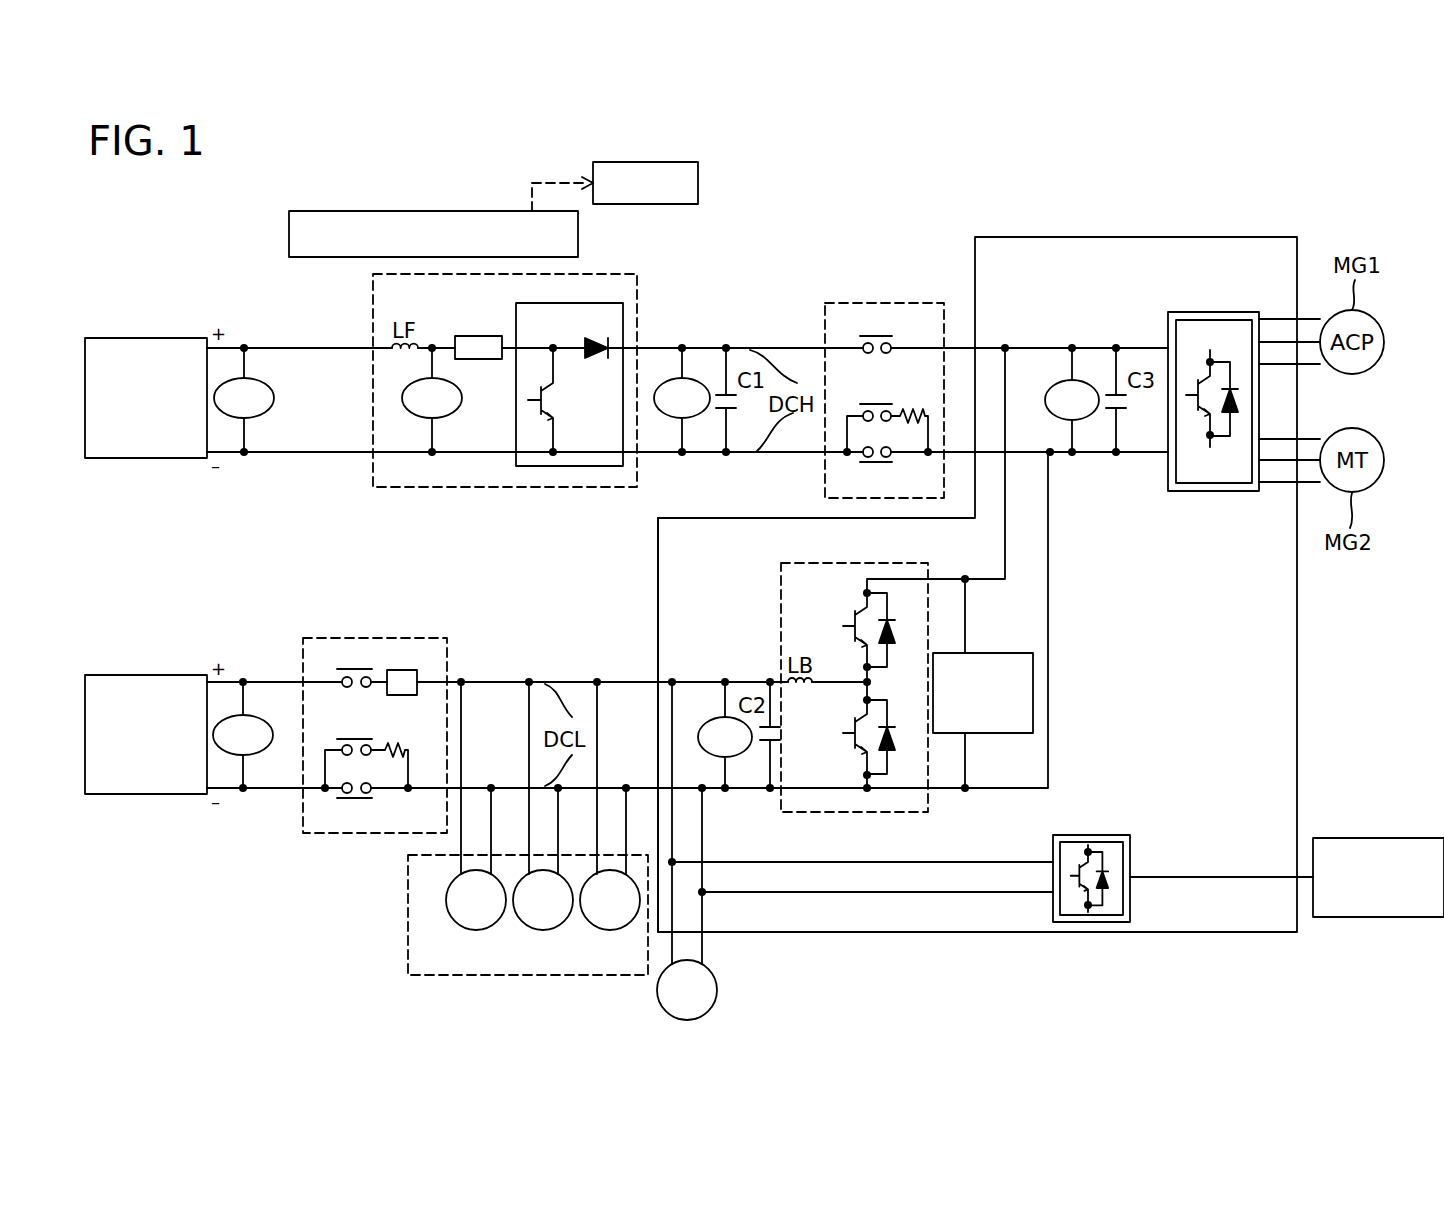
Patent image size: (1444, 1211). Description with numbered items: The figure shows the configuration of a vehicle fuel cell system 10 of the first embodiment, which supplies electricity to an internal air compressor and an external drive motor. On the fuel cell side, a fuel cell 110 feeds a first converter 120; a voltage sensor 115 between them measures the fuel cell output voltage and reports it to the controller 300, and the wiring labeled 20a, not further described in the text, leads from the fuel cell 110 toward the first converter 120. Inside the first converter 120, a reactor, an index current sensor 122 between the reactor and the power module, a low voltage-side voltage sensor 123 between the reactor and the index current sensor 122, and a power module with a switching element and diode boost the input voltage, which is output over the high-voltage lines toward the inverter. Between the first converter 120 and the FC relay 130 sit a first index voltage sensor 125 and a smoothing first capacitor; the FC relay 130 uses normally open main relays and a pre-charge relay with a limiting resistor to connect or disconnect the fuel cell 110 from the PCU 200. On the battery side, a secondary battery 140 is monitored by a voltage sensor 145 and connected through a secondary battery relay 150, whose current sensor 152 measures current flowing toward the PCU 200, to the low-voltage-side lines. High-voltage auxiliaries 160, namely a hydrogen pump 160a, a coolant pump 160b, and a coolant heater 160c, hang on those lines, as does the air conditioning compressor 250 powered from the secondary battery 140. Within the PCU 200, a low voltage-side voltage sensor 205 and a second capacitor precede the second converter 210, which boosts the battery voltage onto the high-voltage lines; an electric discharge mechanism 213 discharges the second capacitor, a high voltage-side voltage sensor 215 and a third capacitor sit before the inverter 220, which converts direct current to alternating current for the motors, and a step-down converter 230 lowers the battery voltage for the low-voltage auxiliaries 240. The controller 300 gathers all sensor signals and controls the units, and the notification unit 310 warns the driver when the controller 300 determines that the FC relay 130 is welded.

The fuel cell system 10 is at (1207, 180).
The fuel cell side wiring 20a is at (385, 449).
The fuel cell 110 is at (146, 338).
The voltage sensor 115 is at (252, 383).
The first converter 120 is at (510, 352).
The index current sensor 122 is at (468, 360).
The low voltage-side voltage sensor 123 is at (411, 417).
The first index voltage sensor 125 is at (662, 413).
The FC relay 130 is at (932, 303).
The secondary battery 140 is at (146, 675).
The voltage sensor 145 is at (250, 722).
The secondary battery relay 150 is at (376, 707).
The current sensor 152 is at (398, 696).
The high-voltage auxiliaries 160 is at (492, 828).
The hydrogen pump 160a is at (452, 923).
The coolant pump 160b is at (520, 923).
The coolant heater 160c is at (588, 923).
The PCU 200 is at (658, 607).
The low voltage-side voltage sensor 205 is at (712, 757).
The second converter 210 is at (781, 580).
The electric discharge mechanism 213 is at (978, 653).
The high voltage-side voltage sensor 215 is at (1052, 419).
The inverter 220 is at (1244, 312).
The step-down converter 230 is at (1092, 835).
The low-voltage auxiliaries 240 is at (1363, 838).
The air conditioning compressor 250 is at (660, 1005).
The controller 300 is at (437, 211).
The notification unit 310 is at (698, 184).